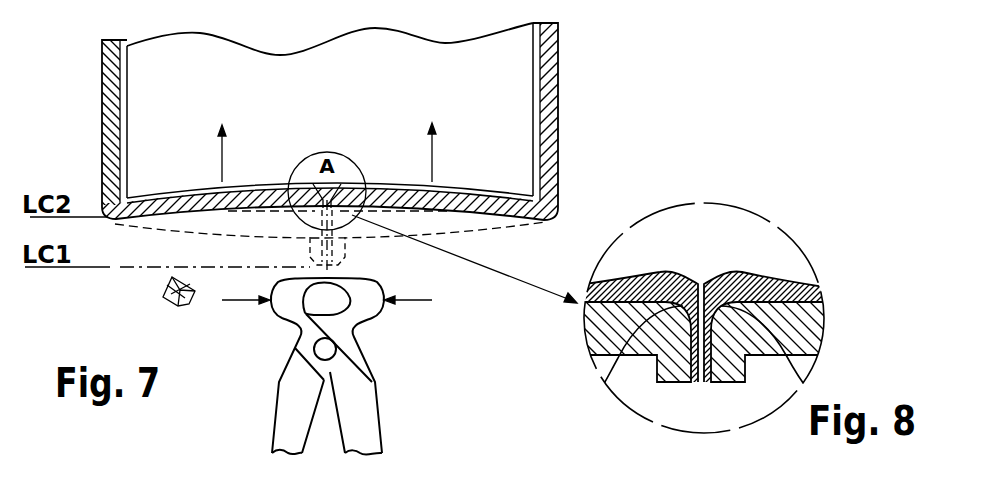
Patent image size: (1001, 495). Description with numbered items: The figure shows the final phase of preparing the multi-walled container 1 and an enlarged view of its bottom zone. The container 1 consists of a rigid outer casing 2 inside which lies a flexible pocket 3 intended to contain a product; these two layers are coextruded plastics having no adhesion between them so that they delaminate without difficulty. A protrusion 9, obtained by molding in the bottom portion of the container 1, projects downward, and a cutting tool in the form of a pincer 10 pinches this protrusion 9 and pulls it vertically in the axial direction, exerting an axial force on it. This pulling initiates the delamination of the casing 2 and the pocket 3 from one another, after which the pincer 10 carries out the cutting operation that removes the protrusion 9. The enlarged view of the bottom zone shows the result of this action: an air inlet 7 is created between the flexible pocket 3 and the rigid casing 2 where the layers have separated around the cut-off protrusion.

In FIG. 7, the container 1 is at (500, 247).
In FIG. 7, the rigid outer casing 2 is at (102, 110).
In FIG. 8, the rigid outer casing 2 is at (600, 326).
In FIG. 7, the flexible pocket 3 is at (128, 130).
In FIG. 8, the flexible pocket 3 is at (665, 272).
In FIG. 8, the air inlet 7 is at (604, 385).
In FIG. 7, the protrusion 9 is at (163, 293).
In FIG. 7, the pincer 10 is at (377, 367).